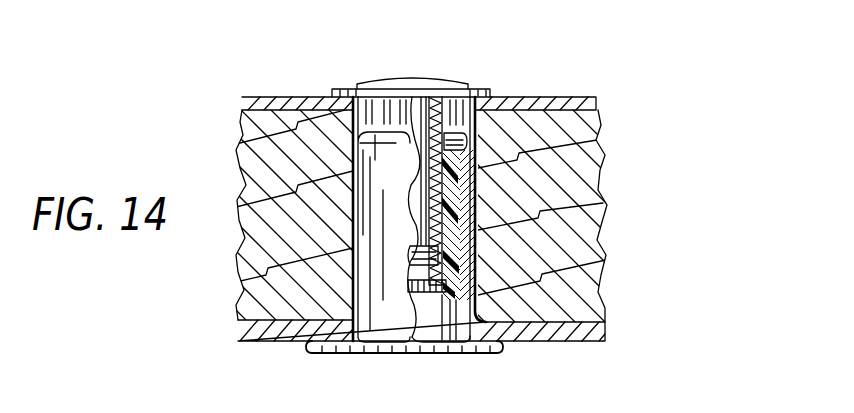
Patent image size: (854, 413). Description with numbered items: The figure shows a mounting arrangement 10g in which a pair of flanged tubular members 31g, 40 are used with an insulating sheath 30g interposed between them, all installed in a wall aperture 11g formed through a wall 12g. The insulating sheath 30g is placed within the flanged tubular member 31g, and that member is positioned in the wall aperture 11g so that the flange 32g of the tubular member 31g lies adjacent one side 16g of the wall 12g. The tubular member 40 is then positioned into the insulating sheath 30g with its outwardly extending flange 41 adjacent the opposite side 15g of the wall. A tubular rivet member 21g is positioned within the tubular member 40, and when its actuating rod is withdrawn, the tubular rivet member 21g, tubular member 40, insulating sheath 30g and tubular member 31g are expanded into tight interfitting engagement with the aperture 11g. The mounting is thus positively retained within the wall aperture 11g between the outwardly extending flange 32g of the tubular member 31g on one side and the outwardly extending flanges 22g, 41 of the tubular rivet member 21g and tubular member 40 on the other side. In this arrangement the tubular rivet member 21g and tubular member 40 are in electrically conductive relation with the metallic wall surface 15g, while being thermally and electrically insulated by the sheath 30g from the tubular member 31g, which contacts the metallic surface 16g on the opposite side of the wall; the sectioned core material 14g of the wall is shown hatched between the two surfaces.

The mounting arrangement 10g is at (437, 206).
The wall aperture 11g is at (355, 100).
The wall 12g is at (437, 206).
The core 14g is at (594, 211).
The metallic wall surface 15g is at (567, 98).
The wall side surface 16g is at (577, 345).
The tubular rivet member 21g is at (420, 115).
The outwardly extending flange 22g is at (375, 89).
The insulating sheath 30g is at (450, 295).
The flanged tubular member 31g is at (466, 308).
The flange 32g is at (498, 354).
The tubular member 40 is at (434, 115).
The outwardly extending flange 41 is at (466, 122).